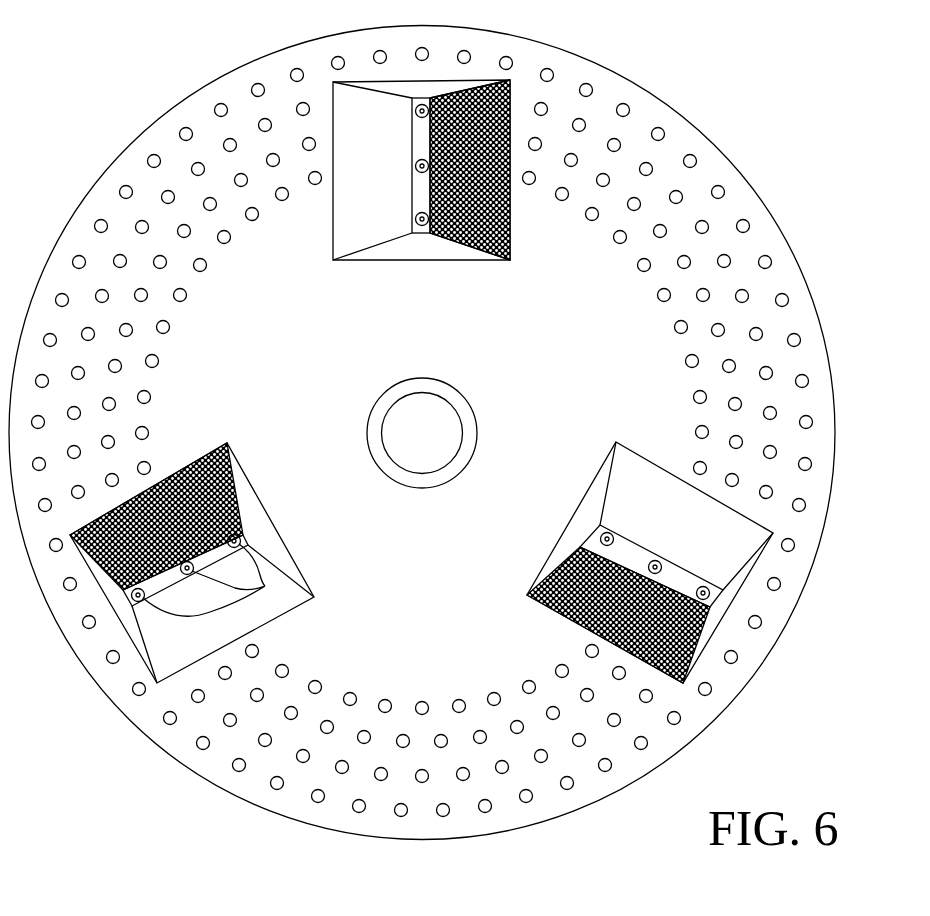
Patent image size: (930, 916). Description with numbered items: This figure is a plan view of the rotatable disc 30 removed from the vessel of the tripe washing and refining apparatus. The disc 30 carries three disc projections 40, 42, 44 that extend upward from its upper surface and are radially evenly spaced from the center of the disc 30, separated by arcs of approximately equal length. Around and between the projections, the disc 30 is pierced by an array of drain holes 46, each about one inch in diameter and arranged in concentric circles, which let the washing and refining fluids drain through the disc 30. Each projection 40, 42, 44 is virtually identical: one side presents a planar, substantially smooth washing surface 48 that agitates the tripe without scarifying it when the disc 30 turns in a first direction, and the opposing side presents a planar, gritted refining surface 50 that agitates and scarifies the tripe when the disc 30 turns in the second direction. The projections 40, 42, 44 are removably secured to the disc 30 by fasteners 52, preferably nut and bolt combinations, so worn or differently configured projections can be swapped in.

The rotatable disc 30 is at (96, 84).
The disc projection 40 is at (220, 544).
The disc projection 42 is at (415, 287).
The disc projection 44 is at (550, 497).
The drain holes 46 is at (205, 269).
The washing surface 48 is at (268, 597).
The refining surface 50 is at (197, 457).
The fasteners 52 is at (150, 600).